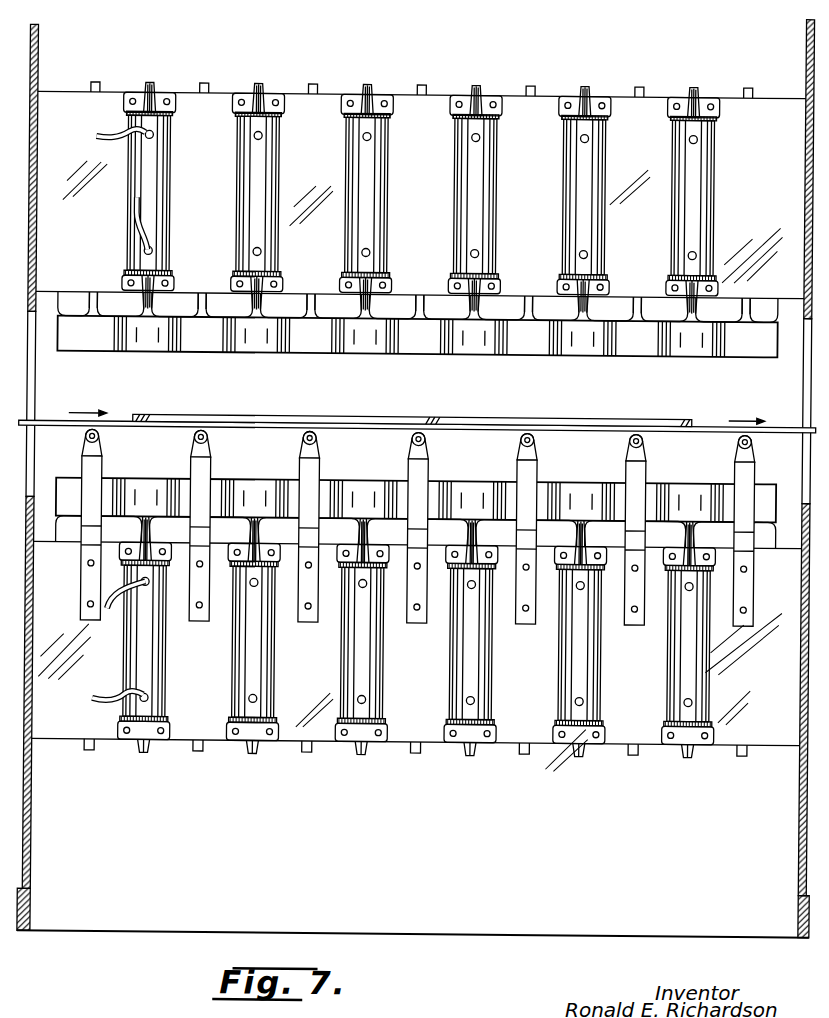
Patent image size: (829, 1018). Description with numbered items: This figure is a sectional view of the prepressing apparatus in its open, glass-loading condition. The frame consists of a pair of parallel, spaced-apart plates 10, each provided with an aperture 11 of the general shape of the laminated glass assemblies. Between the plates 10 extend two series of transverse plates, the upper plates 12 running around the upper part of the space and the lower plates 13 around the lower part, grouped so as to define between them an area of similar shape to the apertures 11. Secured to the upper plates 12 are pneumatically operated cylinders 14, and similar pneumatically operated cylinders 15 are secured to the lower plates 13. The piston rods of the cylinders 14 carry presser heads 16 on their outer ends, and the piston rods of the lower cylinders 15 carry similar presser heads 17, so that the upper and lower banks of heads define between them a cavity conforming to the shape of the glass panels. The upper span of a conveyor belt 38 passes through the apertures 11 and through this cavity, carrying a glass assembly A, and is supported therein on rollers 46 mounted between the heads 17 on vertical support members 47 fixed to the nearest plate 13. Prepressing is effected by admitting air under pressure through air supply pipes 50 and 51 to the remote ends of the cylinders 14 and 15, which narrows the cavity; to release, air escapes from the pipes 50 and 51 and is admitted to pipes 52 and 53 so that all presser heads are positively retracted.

The plates 10 is at (39, 48).
The aperture 11 is at (35, 387).
The transverse plates 12 is at (208, 115).
The transverse plates 13 is at (185, 732).
The pneumatically operated cylinders 14 is at (373, 150).
The pneumatically operated cylinders 15 is at (268, 702).
The presser head 16 is at (90, 348).
The presser heads 17 is at (69, 486).
The conveyor belt 38 is at (779, 421).
The rollers 46 is at (215, 436).
The vertical support members 47 is at (298, 470).
The air supply pipe 50 is at (103, 133).
The air supply pipe 51 is at (107, 703).
The pipe 52 is at (127, 225).
The pipe 53 is at (108, 613).
The glass assembly A is at (443, 417).